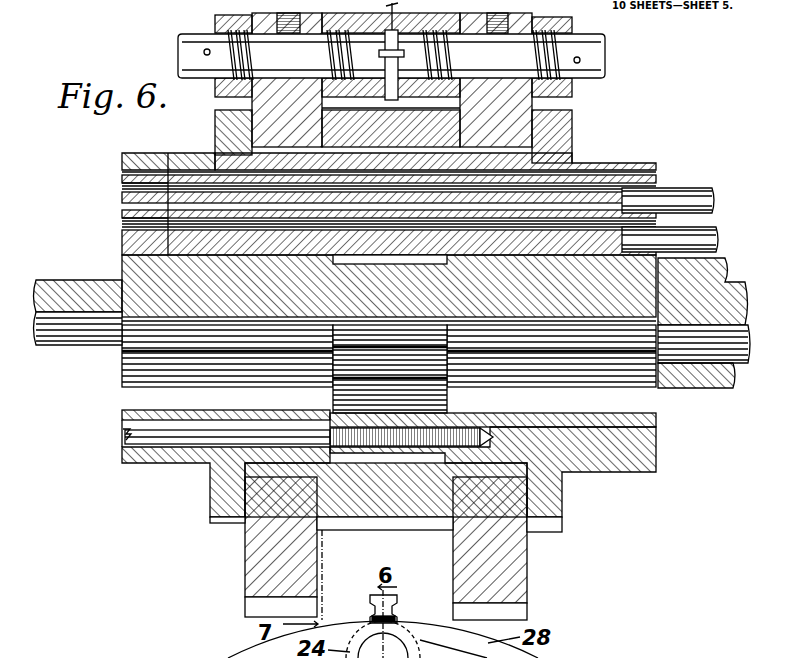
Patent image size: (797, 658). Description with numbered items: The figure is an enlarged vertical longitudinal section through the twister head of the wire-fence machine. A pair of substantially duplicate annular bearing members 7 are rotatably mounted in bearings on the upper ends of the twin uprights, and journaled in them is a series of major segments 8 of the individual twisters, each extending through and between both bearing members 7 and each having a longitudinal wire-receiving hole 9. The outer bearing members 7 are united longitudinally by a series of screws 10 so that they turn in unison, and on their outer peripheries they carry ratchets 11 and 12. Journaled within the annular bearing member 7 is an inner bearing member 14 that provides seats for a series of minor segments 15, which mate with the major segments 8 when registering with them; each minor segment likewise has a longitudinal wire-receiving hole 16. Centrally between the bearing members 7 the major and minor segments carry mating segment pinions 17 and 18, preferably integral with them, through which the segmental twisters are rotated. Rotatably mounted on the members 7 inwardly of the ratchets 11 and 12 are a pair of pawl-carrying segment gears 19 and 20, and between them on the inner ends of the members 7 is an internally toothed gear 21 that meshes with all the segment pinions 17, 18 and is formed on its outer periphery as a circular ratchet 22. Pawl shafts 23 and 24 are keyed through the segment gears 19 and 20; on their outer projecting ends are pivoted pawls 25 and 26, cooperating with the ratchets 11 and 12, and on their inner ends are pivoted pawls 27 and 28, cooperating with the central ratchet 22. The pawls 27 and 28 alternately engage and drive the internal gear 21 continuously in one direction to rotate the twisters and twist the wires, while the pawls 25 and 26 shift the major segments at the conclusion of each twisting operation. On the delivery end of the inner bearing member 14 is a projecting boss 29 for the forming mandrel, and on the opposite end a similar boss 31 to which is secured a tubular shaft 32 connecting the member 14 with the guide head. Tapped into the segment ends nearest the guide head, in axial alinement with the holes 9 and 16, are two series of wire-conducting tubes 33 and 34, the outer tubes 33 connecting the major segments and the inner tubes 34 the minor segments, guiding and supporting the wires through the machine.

The annular bearing member 7 is at (162, 155).
The major segment 8 is at (576, 165).
The wire-receiving hole 9 is at (205, 155).
The screw 10 is at (122, 435).
The ratchet 11 is at (213, 483).
The ratchet 12 is at (562, 498).
The inner bearing member 14 is at (125, 268).
The minor segment 15 is at (121, 242).
The wire-receiving hole 16 is at (600, 165).
The segment pinion 17 is at (393, 168).
The segment pinion 18 is at (407, 260).
The pawl-carrying segment gear 19 is at (250, 552).
The pawl-carrying segment gear 20 is at (515, 556).
The internally toothed gear 21 is at (540, 130).
The circular ratchet 22 is at (420, 522).
The pawl shaft 23 is at (186, 50).
The pawl shaft 24 is at (603, 60).
The pawl 25 is at (215, 26).
The pawl 26 is at (572, 20).
The pawl 27 is at (216, 118).
The pawl 28 is at (573, 97).
The projecting boss 29 is at (82, 338).
The boss 31 is at (713, 388).
The tubular shaft 32 is at (742, 262).
The wire-conducting tube 33 is at (683, 190).
The wire-conducting tube 34 is at (705, 240).